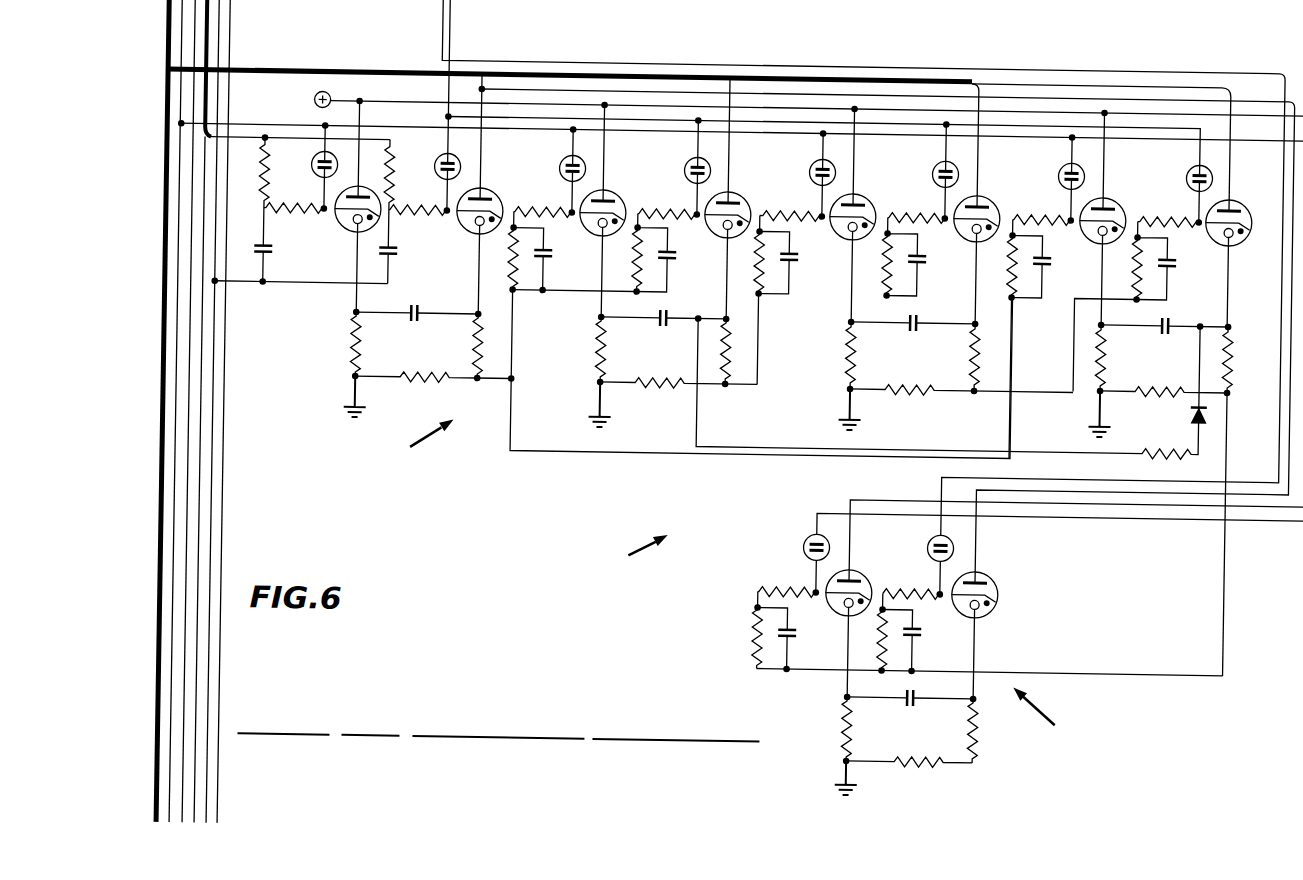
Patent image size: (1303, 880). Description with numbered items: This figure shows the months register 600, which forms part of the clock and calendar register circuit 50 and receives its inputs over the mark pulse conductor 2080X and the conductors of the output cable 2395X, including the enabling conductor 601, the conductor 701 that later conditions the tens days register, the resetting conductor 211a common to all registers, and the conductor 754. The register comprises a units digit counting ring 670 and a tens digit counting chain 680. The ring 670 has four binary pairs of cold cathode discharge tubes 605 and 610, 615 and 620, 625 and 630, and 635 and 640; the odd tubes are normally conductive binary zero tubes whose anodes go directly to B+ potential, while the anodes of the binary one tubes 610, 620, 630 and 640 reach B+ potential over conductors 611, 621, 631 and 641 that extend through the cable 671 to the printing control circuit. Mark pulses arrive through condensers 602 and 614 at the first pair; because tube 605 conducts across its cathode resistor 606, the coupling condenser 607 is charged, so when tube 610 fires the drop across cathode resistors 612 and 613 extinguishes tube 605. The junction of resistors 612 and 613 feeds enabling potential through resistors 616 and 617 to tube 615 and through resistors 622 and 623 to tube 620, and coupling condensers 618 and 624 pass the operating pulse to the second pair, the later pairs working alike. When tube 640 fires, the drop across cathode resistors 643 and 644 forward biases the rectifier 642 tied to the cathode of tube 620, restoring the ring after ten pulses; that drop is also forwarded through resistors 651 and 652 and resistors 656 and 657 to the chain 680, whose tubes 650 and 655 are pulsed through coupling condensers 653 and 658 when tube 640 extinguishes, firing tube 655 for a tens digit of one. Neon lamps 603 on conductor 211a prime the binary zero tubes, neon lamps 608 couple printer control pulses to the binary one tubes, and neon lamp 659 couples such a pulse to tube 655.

The clock and calendar register circuit 50 is at (729, 420).
The months register 600 is at (730, 401).
The units digit counting ring 670 is at (731, 338).
The tens digit counting chain 680 is at (978, 658).
The cable 671 is at (420, 64).
The output cable 2395X is at (207, 37).
The conductor 701 is at (207, 332).
The mark pulse conductor 2080X is at (219, 362).
The resetting conductor 211a is at (181, 411).
The conductor 754 is at (194, 474).
The conductor 601 is at (251, 133).
The condenser 602 is at (276, 250).
The neon lamps 603 is at (316, 168).
The cold cathode discharge tube 605 is at (338, 216).
The cathode resistor 606 is at (365, 338).
The coupling condenser 607 is at (418, 308).
The neon lamps 608 is at (441, 159).
The cold cathode discharge tube 610 is at (460, 217).
The conductor 611 is at (485, 153).
The cathode resistor 612 is at (474, 342).
The cathode resistor 613 is at (420, 376).
The condenser 614 is at (400, 248).
The cold cathode discharge tube 615 is at (591, 221).
The resistor 616 is at (516, 267).
The resistor 617 is at (558, 199).
The coupling condenser 618 is at (550, 252).
The cold cathode discharge tube 620 is at (750, 201).
The conductor 621 is at (732, 149).
The resistor 622 is at (646, 240).
The resistor 623 is at (674, 218).
The coupling condenser 624 is at (673, 255).
The cold cathode discharge tube 625 is at (872, 196).
The cold cathode discharge tube 630 is at (999, 197).
The conductor 631 is at (979, 153).
The cold cathode discharge tube 635 is at (1123, 195).
The cold cathode discharge tube 640 is at (1267, 172).
The conductor 641 is at (1230, 109).
The rectifier 642 is at (1191, 396).
The cathode resistor 643 is at (1175, 373).
The cathode resistor 644 is at (1234, 364).
The cold cathode discharge tube 650 is at (854, 560).
The resistor 651 is at (765, 624).
The resistor 652 is at (807, 574).
The coupling condenser 653 is at (799, 626).
The cold cathode discharge tube 655 is at (998, 565).
The resistor 656 is at (887, 644).
The resistor 657 is at (933, 573).
The coupling condenser 658 is at (924, 624).
The neon lamp 659 is at (936, 530).